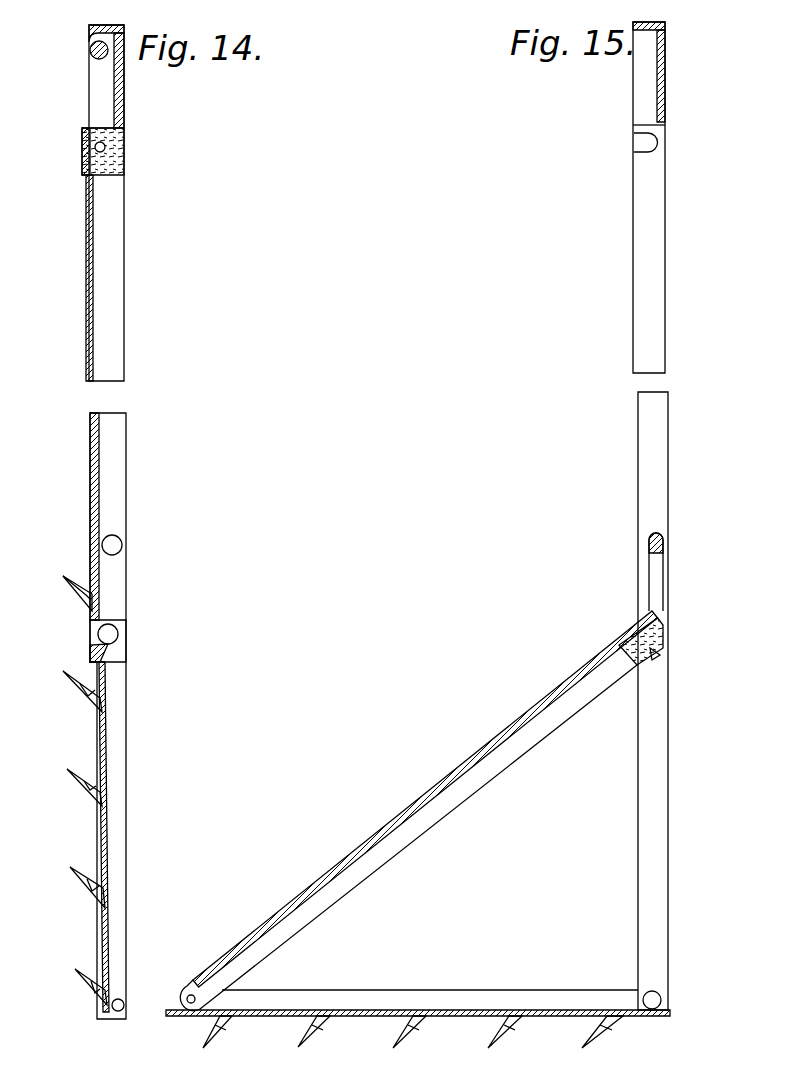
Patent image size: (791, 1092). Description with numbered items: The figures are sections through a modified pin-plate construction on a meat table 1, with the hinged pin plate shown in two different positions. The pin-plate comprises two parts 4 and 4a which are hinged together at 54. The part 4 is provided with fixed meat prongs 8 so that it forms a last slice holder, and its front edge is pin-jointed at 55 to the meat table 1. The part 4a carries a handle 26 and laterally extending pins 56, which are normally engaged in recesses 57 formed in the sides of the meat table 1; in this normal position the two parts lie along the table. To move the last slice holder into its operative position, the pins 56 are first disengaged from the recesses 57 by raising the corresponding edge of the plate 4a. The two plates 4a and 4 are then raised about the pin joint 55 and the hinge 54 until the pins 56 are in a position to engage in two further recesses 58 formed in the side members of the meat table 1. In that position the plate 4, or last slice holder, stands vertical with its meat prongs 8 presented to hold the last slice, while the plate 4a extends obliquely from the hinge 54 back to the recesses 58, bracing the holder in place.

In FIG. 14, the meat table 1 is at (112, 297).
In FIG. 15, the meat table 1 is at (650, 361).
In FIG. 14, the pin-plate part 4 is at (100, 603).
In FIG. 15, the pin-plate part 4 is at (278, 1018).
In FIG. 14, the pin-plate part 4a is at (97, 365).
In FIG. 15, the pin-plate part 4a is at (470, 748).
In FIG. 14, the meat prongs 8 is at (87, 693).
In FIG. 14, the handle 26 is at (101, 120).
In FIG. 15, the handle 26 is at (655, 592).
In FIG. 14, the hinge 54 is at (108, 545).
In FIG. 15, the hinge 54 is at (190, 994).
In FIG. 14, the pin joint 55 is at (118, 1012).
In FIG. 15, the pins 56 is at (665, 637).
In FIG. 15, the recesses 57 is at (645, 143).
In FIG. 14, the recesses 58 is at (108, 640).
In FIG. 15, the recesses 58 is at (655, 657).